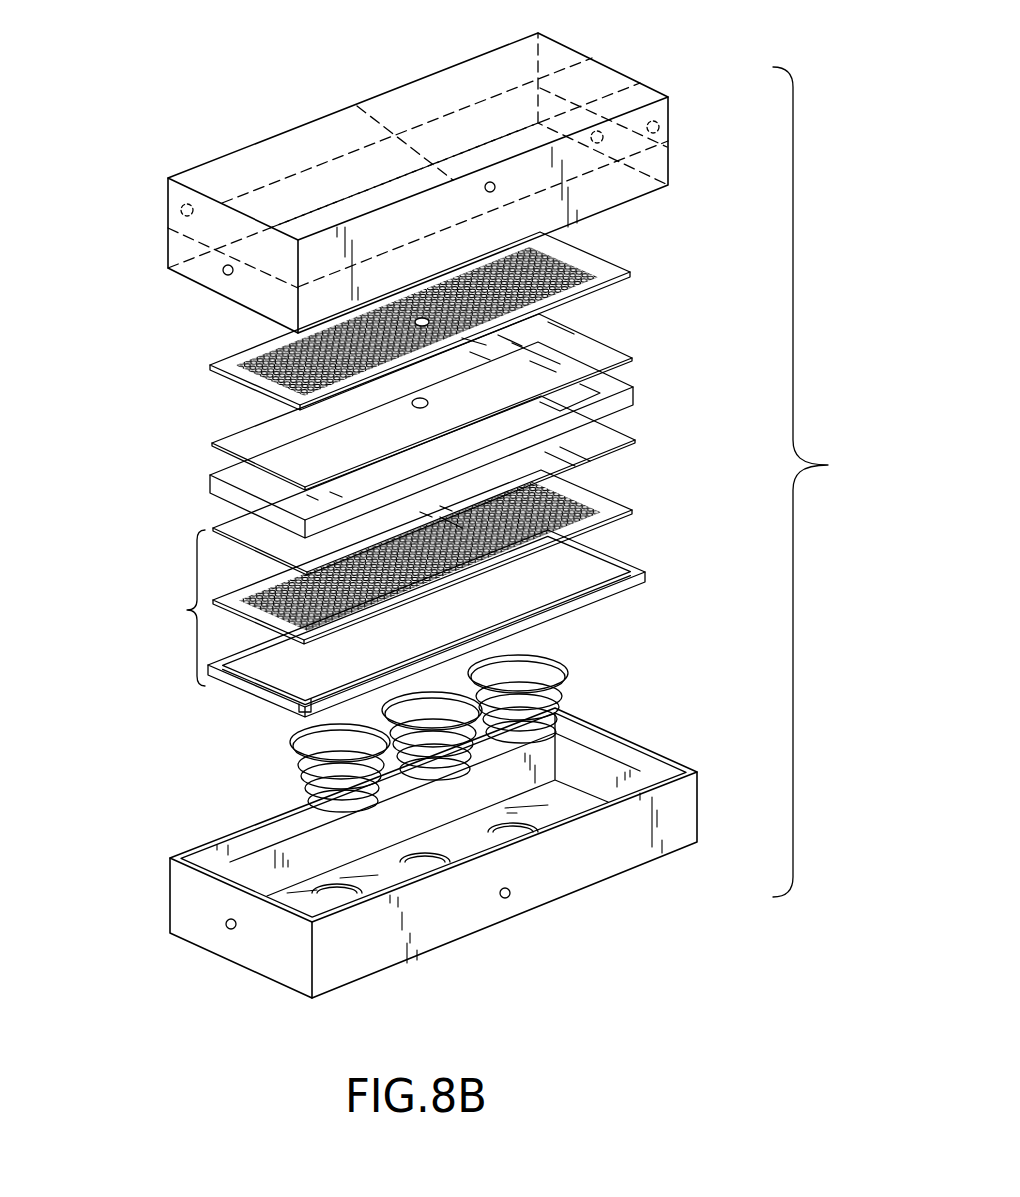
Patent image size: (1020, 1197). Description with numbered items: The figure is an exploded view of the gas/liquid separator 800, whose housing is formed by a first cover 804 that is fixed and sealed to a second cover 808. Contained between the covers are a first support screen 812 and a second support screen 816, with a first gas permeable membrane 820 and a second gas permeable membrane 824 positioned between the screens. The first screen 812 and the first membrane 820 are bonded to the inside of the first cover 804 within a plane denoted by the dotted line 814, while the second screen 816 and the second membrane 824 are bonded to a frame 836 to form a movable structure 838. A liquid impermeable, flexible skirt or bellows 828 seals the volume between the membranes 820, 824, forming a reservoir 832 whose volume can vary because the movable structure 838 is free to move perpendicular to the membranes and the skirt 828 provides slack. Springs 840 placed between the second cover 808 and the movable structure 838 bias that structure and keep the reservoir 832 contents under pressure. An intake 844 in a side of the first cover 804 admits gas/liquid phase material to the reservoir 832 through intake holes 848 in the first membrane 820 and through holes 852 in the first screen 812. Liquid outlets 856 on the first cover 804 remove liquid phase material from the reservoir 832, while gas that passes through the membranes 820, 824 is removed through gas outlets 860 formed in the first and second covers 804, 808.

The gas/liquid separator 800 is at (826, 482).
The first cover 804 is at (337, 112).
The second cover 808 is at (168, 903).
The first support surface or screen 812 is at (603, 263).
The dotted line 814 is at (254, 197).
The second support surface or screen 816 is at (607, 502).
The first gas permeable membrane 820 is at (633, 360).
The second gas permeable membrane 824 is at (585, 452).
The flexible skirt or bellows 828 is at (211, 494).
The reservoir 832 is at (550, 349).
The frame 836 is at (643, 587).
The movable structure 838 is at (174, 608).
The springs 840 is at (290, 745).
The intake 844 is at (494, 190).
The intake holes 848 is at (412, 404).
The through holes 852 is at (429, 321).
The liquid outlets 856 is at (597, 133).
The gas outlets 860 is at (656, 126).